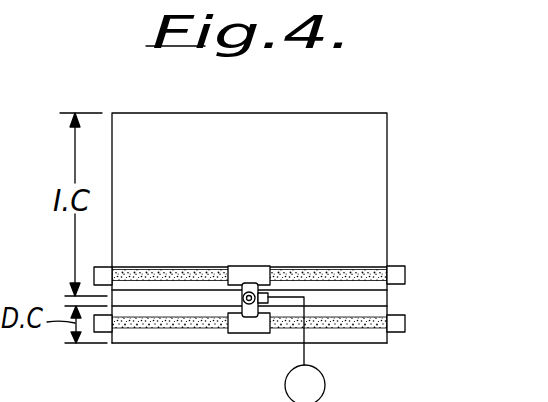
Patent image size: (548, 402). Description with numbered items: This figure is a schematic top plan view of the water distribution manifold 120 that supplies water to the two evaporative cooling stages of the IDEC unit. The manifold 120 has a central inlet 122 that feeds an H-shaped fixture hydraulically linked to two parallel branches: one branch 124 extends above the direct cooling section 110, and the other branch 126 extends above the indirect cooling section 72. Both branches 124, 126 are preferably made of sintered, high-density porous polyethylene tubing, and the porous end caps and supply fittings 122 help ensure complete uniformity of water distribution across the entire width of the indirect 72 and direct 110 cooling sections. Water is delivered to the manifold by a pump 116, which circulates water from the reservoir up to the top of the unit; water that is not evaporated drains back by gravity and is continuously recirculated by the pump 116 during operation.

The indirect cooling section 72 is at (361, 151).
The manifold branch 126 is at (368, 275).
The direct cooling section 110 is at (370, 312).
The manifold branch 124 is at (368, 323).
The distribution manifold 120 is at (187, 330).
The central inlet 122 is at (251, 292).
The pump 116 is at (325, 392).